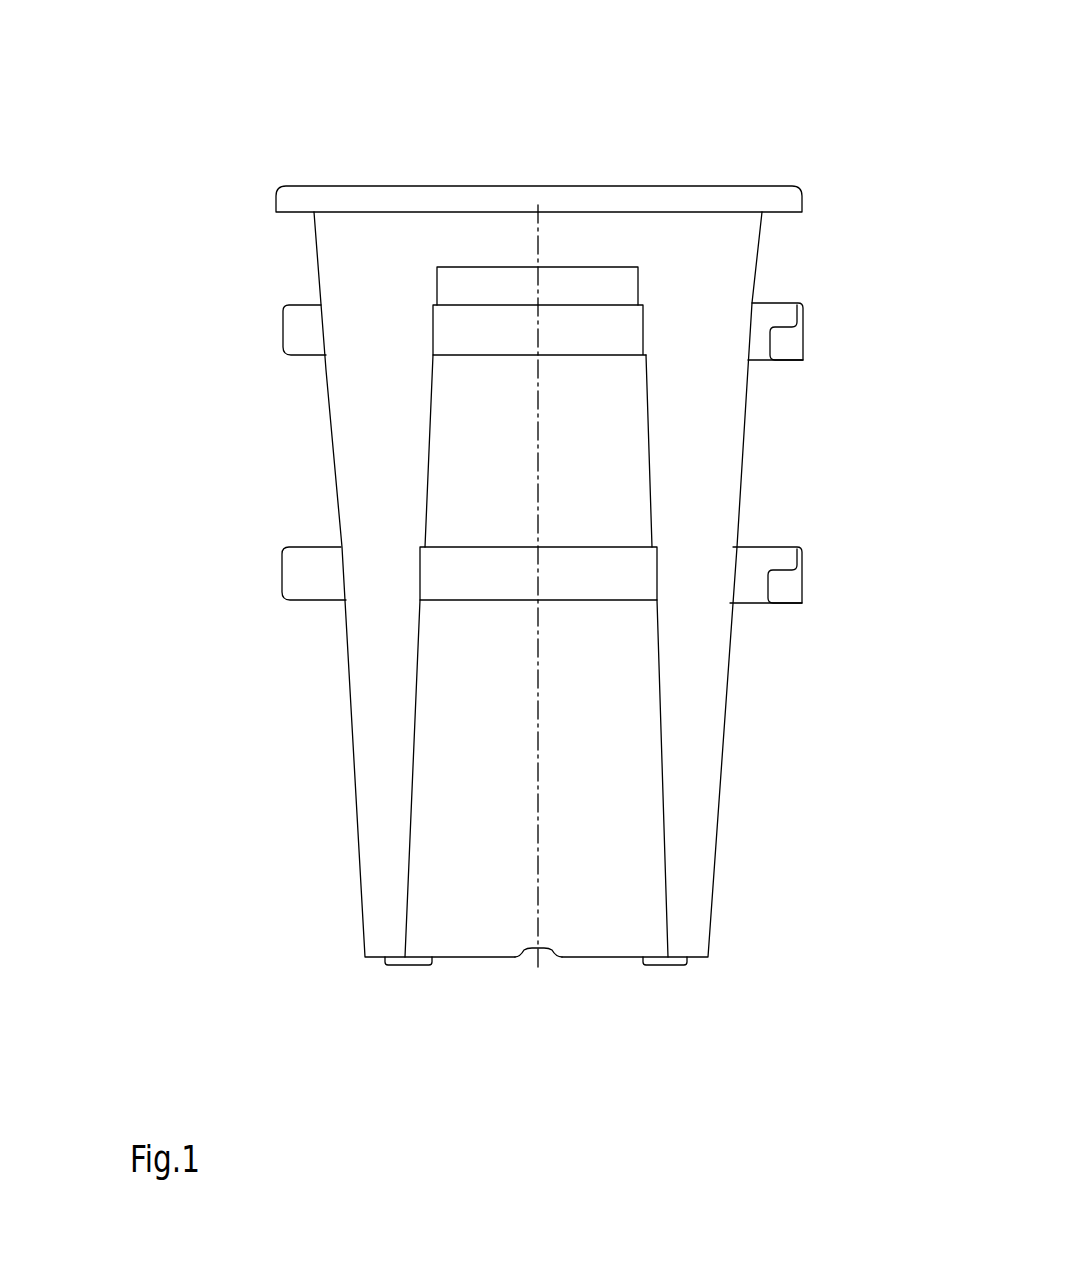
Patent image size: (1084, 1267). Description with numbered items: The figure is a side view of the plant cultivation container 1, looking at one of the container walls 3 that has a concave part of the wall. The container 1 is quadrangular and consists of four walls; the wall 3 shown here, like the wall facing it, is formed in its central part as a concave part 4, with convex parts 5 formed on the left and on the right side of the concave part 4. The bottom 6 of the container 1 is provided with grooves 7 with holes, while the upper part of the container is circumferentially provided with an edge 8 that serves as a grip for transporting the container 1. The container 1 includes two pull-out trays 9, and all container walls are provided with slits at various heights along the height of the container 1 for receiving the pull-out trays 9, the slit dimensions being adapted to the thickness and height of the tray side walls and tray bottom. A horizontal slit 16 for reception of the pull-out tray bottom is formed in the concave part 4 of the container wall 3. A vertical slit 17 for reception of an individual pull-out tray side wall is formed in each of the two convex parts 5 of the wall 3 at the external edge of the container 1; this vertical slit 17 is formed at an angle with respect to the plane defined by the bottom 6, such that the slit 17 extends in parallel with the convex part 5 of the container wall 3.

The plant cultivation container 1 is at (208, 243).
The container wall 3 is at (602, 238).
The concave part 4 is at (603, 410).
The convex part 5 is at (690, 460).
The bottom 6 is at (608, 958).
The groove 7 is at (532, 960).
The edge 8 is at (806, 200).
The pull-out tray 9 is at (310, 327).
The horizontal slit 16 is at (456, 601).
The vertical slit 17 is at (427, 327).